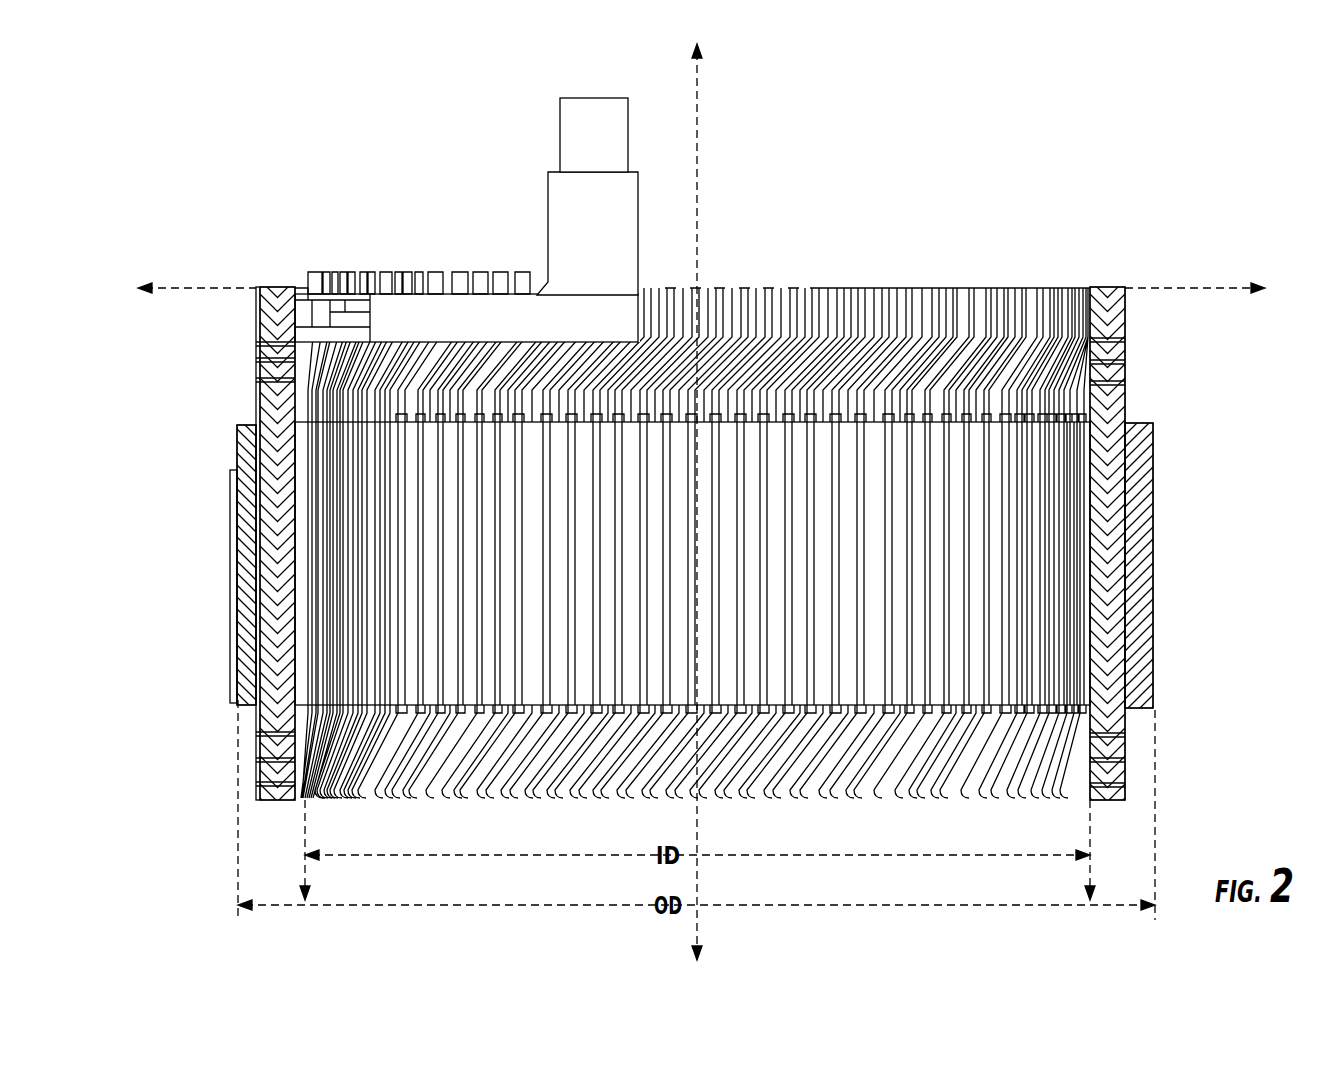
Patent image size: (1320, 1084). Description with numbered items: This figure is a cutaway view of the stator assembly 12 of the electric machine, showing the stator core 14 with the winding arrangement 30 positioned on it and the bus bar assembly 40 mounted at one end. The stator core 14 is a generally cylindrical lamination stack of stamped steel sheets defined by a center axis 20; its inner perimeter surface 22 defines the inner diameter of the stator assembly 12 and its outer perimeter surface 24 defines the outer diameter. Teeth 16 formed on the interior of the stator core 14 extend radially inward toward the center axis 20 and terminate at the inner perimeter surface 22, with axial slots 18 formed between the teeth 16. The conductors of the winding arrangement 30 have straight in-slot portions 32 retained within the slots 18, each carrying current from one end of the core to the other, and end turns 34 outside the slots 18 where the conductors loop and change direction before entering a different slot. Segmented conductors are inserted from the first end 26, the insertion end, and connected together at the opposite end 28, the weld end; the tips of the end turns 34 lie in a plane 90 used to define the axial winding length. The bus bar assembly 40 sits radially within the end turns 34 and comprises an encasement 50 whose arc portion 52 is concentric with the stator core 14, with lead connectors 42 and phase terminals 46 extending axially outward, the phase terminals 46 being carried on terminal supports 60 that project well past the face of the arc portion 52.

The stator assembly 12 is at (200, 228).
The stator core 14 is at (1155, 463).
The teeth 16 is at (655, 640).
The axial slots 18 is at (770, 608).
The center axis 20 is at (706, 118).
The inner perimeter surface 22 is at (975, 521).
The outer perimeter surface 24 is at (1153, 680).
The first end 26 is at (430, 818).
The opposite end 28 is at (1052, 252).
The winding arrangement 30 is at (1060, 377).
The in-slot portions 32 is at (1090, 660).
The end turns 34 is at (793, 303).
The bus bar assembly 40 is at (503, 240).
The lead connectors 42 is at (443, 272).
The phase terminals 46 is at (578, 130).
The encasement 50 is at (520, 300).
The arc portion 52 is at (457, 300).
The terminal supports 60 is at (612, 220).
The plane 90 is at (1182, 287).